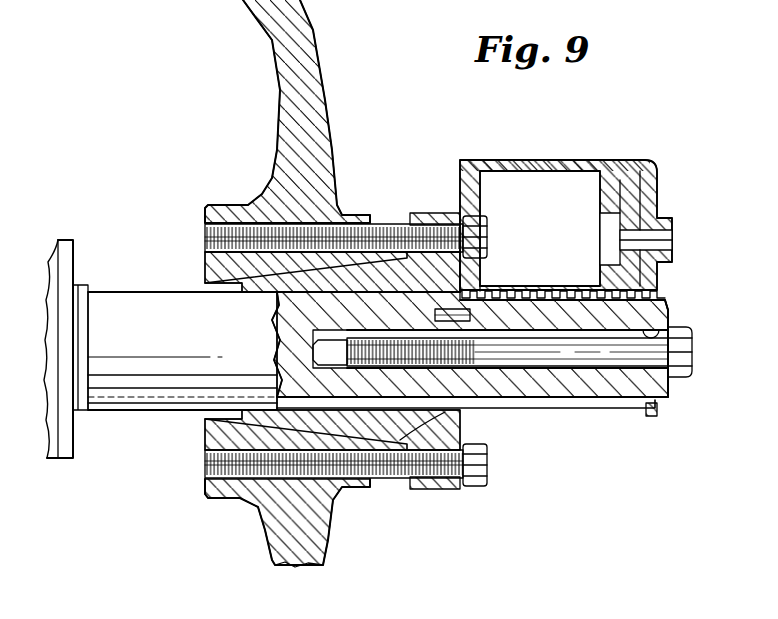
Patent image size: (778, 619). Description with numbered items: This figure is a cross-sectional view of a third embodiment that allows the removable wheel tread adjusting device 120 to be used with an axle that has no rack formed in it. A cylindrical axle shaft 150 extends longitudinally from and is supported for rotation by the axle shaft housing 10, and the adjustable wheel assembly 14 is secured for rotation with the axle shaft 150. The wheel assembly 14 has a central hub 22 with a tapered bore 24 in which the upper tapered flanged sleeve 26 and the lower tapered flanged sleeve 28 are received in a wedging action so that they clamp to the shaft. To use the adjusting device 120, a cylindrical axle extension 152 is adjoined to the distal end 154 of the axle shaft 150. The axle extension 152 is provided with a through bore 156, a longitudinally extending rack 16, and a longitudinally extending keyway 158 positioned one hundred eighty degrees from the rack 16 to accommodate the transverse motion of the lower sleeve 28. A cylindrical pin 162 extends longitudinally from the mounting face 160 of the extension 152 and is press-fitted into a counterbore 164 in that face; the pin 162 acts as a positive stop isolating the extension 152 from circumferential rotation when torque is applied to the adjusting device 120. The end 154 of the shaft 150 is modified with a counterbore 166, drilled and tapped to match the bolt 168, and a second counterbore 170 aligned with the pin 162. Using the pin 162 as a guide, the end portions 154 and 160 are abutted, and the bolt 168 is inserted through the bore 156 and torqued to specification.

The axle shaft housing 10 is at (76, 238).
The adjustable wheel assembly 14 is at (172, 110).
The rack 16 is at (494, 288).
The central hub 22 is at (230, 205).
The tapered bore 24 is at (245, 286).
The upper tapered flanged sleeve 26 is at (432, 211).
The lower tapered flanged sleeve 28 is at (446, 489).
The removable wheel tread adjusting device 120 is at (690, 137).
The cylindrical axle shaft 150 is at (158, 412).
The cylindrical axle extension 152 is at (630, 416).
The distal end of axle shaft 154 is at (470, 374).
The through bore 156 is at (668, 312).
The keyway 158 is at (588, 402).
The mounting face 160 is at (412, 410).
The cylindrical pin 162 is at (490, 298).
The counterbore 164 is at (513, 304).
The counterbore 166 is at (368, 370).
The bolt 168 is at (690, 372).
The second counterbore 170 is at (435, 315).